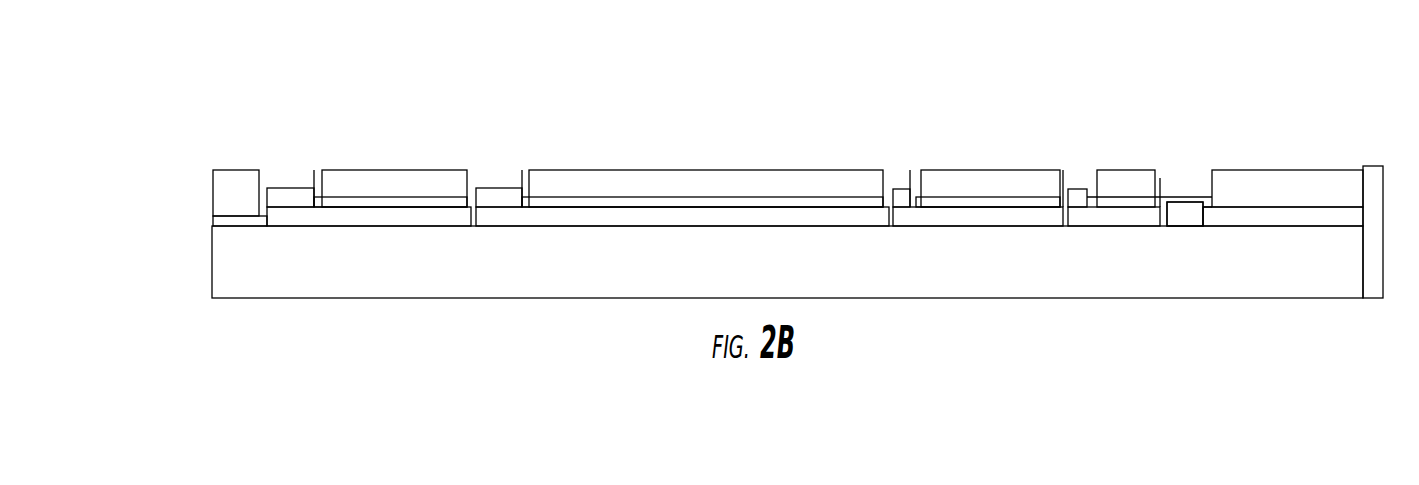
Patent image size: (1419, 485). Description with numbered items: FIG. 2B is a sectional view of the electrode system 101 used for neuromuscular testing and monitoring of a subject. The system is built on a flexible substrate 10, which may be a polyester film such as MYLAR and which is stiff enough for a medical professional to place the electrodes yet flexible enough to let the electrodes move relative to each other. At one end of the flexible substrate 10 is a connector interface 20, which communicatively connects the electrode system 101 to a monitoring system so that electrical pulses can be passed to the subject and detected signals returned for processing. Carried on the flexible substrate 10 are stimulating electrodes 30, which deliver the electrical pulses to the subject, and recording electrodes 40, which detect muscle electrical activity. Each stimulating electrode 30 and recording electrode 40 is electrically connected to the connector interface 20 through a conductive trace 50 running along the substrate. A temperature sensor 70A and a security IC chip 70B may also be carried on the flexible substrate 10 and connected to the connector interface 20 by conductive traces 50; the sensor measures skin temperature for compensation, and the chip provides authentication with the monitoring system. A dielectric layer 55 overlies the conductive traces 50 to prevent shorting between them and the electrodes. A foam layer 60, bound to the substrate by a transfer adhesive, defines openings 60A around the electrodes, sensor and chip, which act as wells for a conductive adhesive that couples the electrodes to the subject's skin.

The flexible substrate 10 is at (212, 262).
The connector interface 20 is at (1370, 288).
The stimulating electrode 30 is at (898, 188).
The recording electrode 40 is at (290, 188).
The conductive trace 50 is at (406, 227).
The dielectric layer 55 is at (213, 221).
The foam layer 60 is at (236, 170).
The openings 60A is at (307, 168).
The temperature sensor 70A is at (1180, 210).
The security IC chip 70B is at (1185, 214).
The electrode system 101 is at (840, 113).